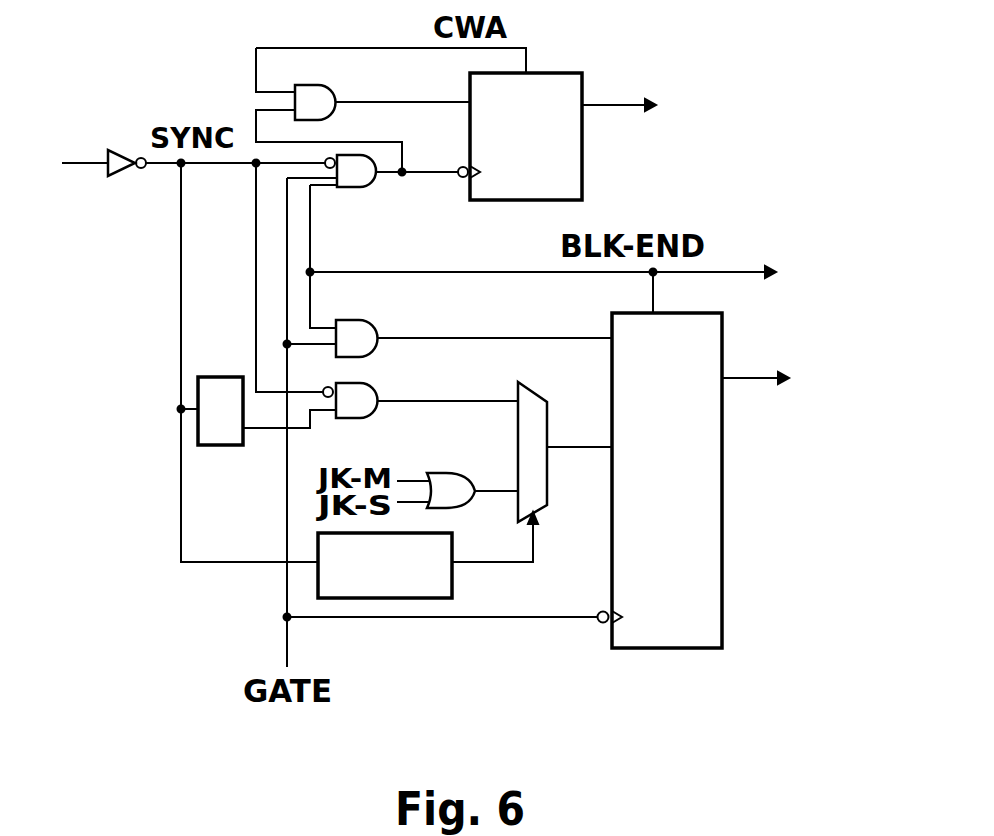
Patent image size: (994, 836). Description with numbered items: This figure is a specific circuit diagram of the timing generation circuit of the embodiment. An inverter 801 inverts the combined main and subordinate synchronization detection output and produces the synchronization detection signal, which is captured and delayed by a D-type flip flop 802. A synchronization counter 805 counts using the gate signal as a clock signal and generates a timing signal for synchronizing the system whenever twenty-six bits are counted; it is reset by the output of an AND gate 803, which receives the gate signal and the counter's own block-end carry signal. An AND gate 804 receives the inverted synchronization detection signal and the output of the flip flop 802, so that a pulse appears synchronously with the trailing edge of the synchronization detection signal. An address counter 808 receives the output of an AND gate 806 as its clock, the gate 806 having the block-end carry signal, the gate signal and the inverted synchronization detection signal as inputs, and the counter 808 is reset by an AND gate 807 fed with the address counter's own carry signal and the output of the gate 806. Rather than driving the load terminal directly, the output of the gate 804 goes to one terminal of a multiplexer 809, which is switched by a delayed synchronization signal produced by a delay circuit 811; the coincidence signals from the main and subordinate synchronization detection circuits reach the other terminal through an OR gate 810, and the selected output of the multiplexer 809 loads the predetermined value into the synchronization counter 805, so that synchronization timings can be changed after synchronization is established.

The inverter 801 is at (117, 177).
The D-type flip flop 802 is at (218, 377).
The AND gate 803 is at (352, 327).
The AND gate 804 is at (352, 393).
The synchronization counter 805 is at (715, 590).
The AND gate 806 is at (353, 187).
The AND gate 807 is at (318, 92).
The address counter 808 is at (568, 192).
The multiplexer 809 is at (530, 400).
The OR gate 810 is at (438, 480).
The delay circuit 811 is at (450, 598).